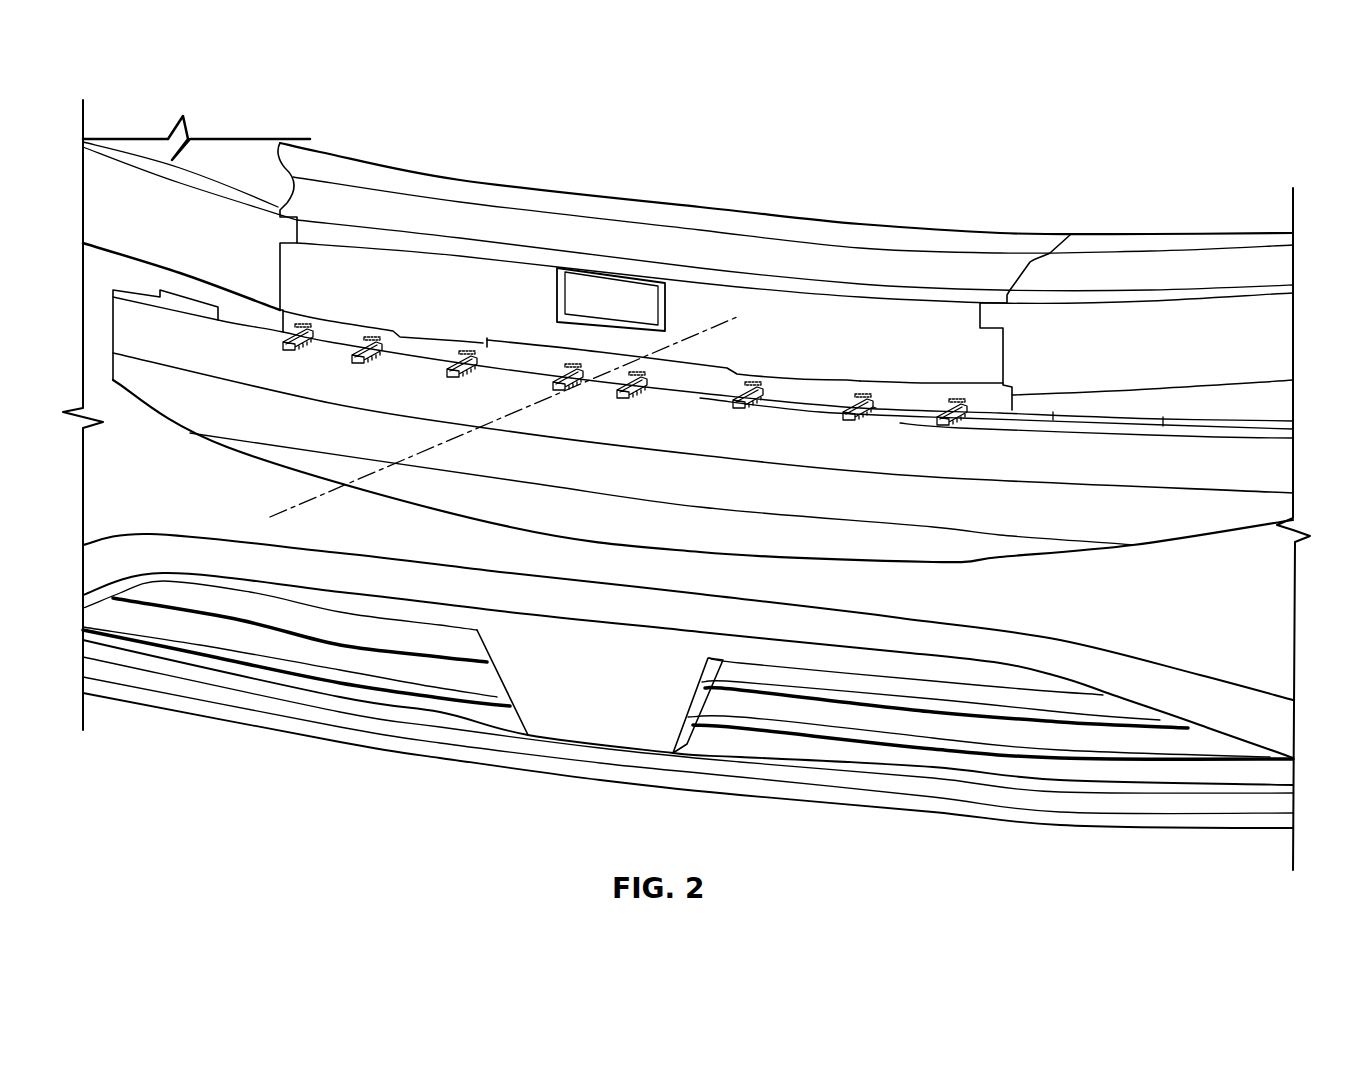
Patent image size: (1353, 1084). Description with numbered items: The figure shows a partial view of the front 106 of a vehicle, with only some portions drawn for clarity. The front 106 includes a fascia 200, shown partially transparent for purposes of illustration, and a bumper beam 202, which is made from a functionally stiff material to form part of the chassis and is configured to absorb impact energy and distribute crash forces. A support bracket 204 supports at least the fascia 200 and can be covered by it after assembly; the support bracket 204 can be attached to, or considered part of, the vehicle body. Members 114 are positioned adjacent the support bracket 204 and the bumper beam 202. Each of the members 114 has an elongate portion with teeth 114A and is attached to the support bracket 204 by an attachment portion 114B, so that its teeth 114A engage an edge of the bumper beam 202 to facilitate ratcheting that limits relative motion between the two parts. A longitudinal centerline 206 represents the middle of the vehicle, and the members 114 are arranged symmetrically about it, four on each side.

The front 106 is at (1245, 138).
The fascia 200 is at (1248, 615).
The bumper beam 202 is at (1087, 552).
The support bracket 204 is at (380, 166).
The longitudinal centerline 206 is at (453, 442).
The members 114 is at (935, 425).
The teeth 114A is at (863, 410).
The attachment portion 114B is at (850, 397).